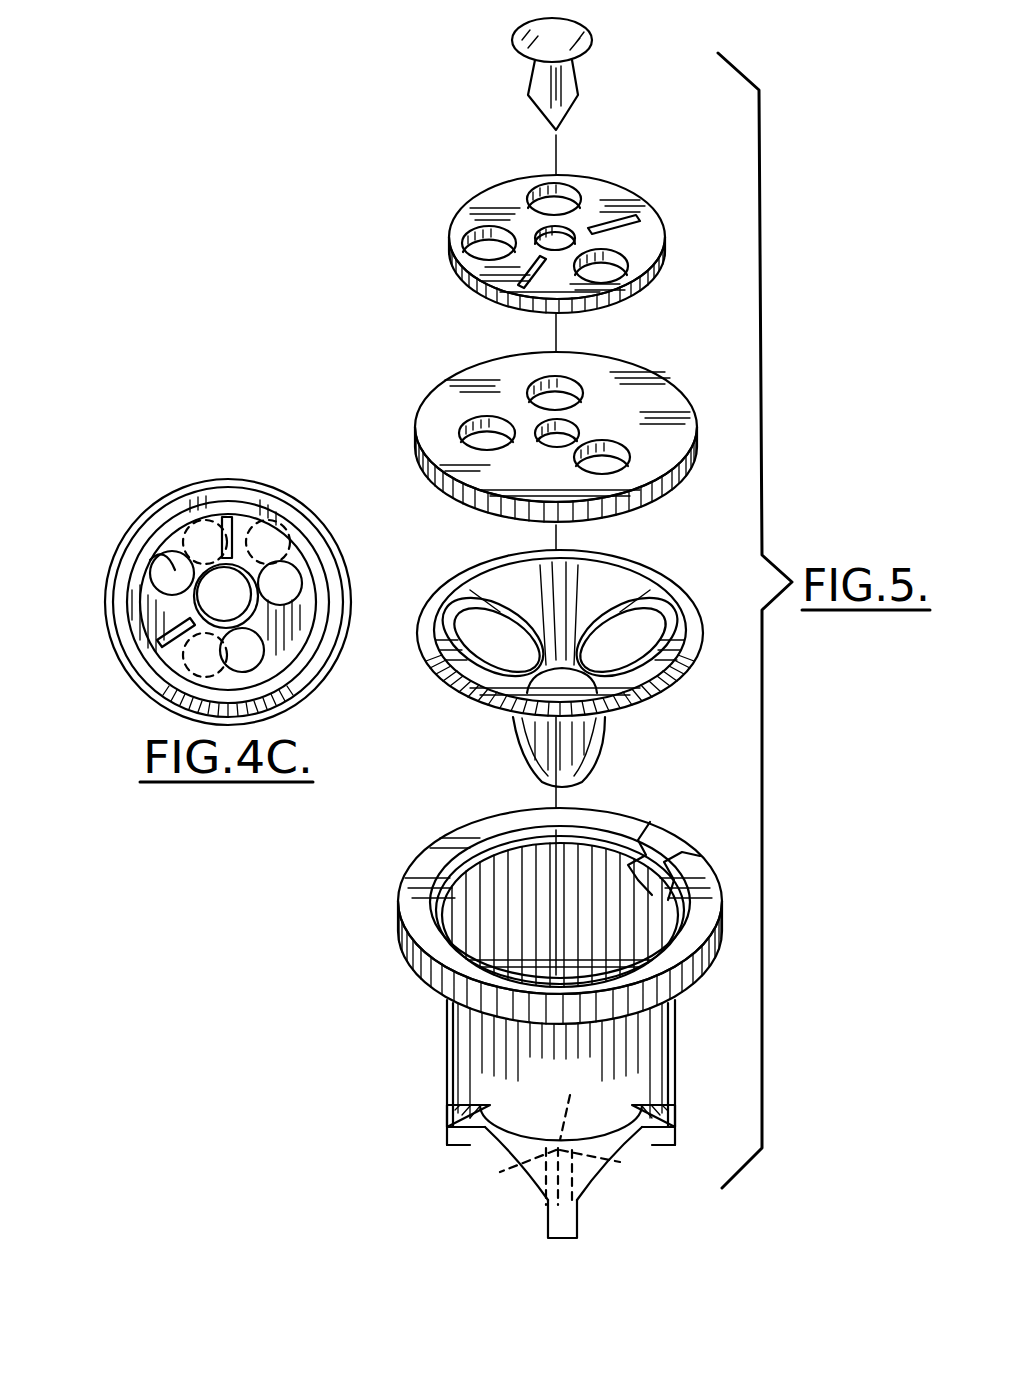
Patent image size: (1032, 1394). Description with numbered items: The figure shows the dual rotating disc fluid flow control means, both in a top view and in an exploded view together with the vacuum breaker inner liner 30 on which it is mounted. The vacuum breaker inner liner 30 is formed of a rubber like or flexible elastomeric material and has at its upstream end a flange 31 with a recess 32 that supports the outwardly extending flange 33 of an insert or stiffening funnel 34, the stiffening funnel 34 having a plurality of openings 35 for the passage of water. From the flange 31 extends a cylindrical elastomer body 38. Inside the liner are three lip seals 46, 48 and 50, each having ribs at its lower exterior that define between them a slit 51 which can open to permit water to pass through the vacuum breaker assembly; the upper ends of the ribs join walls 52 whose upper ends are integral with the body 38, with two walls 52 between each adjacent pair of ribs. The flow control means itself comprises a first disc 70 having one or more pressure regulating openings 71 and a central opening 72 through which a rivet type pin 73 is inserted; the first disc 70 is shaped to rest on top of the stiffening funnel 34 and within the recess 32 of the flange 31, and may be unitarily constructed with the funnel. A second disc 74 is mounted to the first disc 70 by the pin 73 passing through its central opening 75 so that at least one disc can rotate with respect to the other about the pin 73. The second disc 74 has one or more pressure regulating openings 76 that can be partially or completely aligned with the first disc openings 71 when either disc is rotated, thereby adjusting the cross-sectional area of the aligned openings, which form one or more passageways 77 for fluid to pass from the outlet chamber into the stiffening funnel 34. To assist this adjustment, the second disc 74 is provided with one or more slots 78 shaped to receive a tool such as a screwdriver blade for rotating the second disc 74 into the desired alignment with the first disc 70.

In FIG. 5, the vacuum breaker inner liner 30 is at (385, 967).
In FIG. 5, the flange 31 is at (423, 878).
In FIG. 4C, the flange 31 is at (172, 500).
In FIG. 5, the recess 32 is at (620, 842).
In FIG. 5, the outwardly extending flange 33 is at (623, 705).
In FIG. 5, the stiffening funnel 34 is at (515, 722).
In FIG. 5, the openings 35 is at (488, 618).
In FIG. 5, the body 38 is at (447, 1040).
In FIG. 5, the lip seal 46 is at (490, 1160).
In FIG. 5, the lip seal 48 is at (546, 1225).
In FIG. 5, the lip seal 50 is at (650, 1145).
In FIG. 5, the slit 51 is at (600, 1192).
In FIG. 5, the walls 52 is at (480, 1140).
In FIG. 5, the first disc 70 is at (660, 395).
In FIG. 4C, the first disc 70 is at (113, 612).
In FIG. 5, the pressure regulating openings 71 is at (565, 400).
In FIG. 4C, the pressure regulating openings 71 is at (187, 530).
In FIG. 5, the central opening 72 is at (540, 440).
In FIG. 5, the rivet type pin 73 is at (590, 35).
In FIG. 4C, the rivet type pin 73 is at (262, 672).
In FIG. 5, the second disc 74 is at (460, 212).
In FIG. 4C, the second disc 74 is at (300, 610).
In FIG. 5, the central opening 75 is at (545, 233).
In FIG. 5, the pressure regulating openings 76 is at (575, 197).
In FIG. 4C, the pressure regulating openings 76 is at (160, 560).
In FIG. 4C, the passageways 77 is at (172, 578).
In FIG. 5, the slots 78 is at (625, 218).
In FIG. 4C, the slots 78 is at (226, 520).